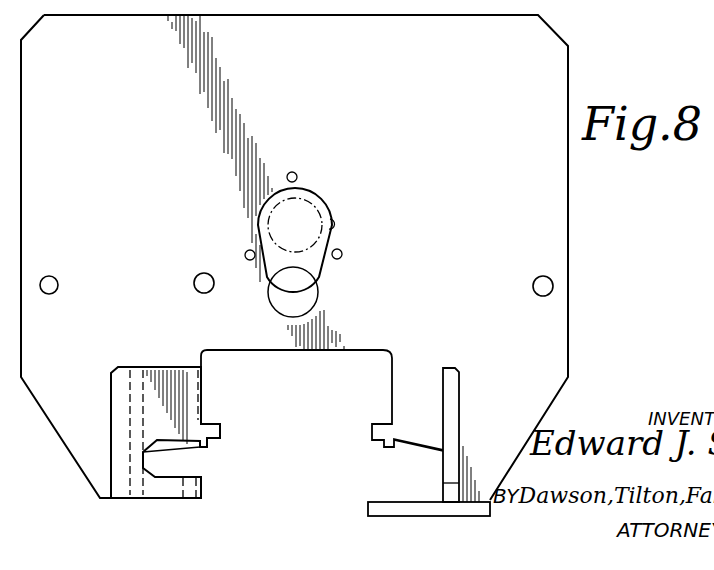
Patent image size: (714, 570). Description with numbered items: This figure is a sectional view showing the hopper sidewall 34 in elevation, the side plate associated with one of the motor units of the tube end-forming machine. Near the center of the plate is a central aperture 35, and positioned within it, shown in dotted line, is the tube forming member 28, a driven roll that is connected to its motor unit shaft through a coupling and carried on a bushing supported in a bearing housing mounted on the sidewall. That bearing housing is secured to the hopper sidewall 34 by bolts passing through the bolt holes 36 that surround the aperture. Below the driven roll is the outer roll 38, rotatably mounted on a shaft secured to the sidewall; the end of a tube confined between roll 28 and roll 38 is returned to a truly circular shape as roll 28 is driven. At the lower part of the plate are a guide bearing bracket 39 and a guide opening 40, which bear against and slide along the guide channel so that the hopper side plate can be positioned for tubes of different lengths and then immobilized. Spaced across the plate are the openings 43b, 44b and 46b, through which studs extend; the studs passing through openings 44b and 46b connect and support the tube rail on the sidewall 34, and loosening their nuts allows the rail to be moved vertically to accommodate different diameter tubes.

The tube forming member 28 is at (318, 216).
The hopper sidewall 34 is at (547, 214).
The central aperture 35 is at (333, 224).
The bolt holes 36 is at (286, 177).
The outer roll 38 is at (313, 298).
The guide bearing bracket 39 is at (123, 492).
The guide opening 40 is at (389, 505).
The opening 43b is at (112, 273).
The opening 44b is at (219, 252).
The opening 46b is at (623, 291).